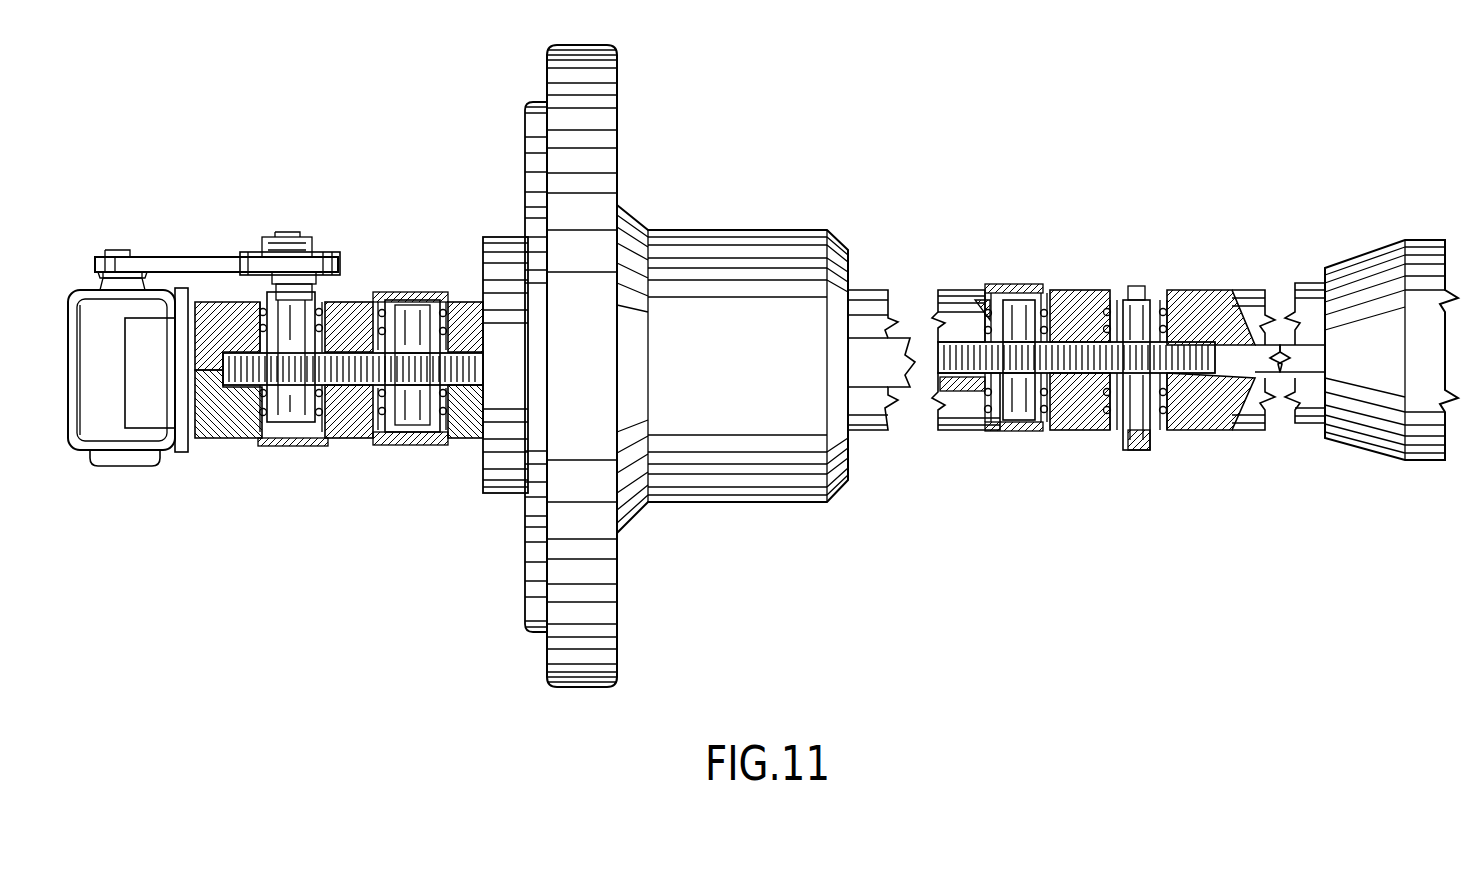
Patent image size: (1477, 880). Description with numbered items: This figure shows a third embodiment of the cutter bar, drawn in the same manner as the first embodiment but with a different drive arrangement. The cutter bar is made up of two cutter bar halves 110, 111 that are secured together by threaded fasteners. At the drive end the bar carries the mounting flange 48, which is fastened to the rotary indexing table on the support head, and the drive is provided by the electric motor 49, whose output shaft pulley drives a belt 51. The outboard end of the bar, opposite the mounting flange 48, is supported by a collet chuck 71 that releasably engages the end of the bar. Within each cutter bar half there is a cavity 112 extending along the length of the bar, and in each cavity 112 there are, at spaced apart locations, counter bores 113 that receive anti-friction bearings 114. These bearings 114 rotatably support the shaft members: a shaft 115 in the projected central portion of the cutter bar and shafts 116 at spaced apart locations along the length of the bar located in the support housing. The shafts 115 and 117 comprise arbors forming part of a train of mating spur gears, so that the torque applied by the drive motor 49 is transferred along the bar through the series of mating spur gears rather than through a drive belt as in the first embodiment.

The mounting flange 48 is at (617, 118).
The electric motor 49 is at (122, 465).
The belt 51 is at (170, 258).
The collet chuck 71 is at (1357, 445).
The cutter bar half 110 is at (958, 288).
The cutter bar half 111 is at (948, 430).
The cavity 112 is at (1185, 423).
The counter bores 113 is at (253, 338).
The anti-friction bearings 114 is at (470, 300).
The shaft 115 is at (1025, 310).
The shafts 116 is at (418, 425).
The shaft 117 is at (250, 372).